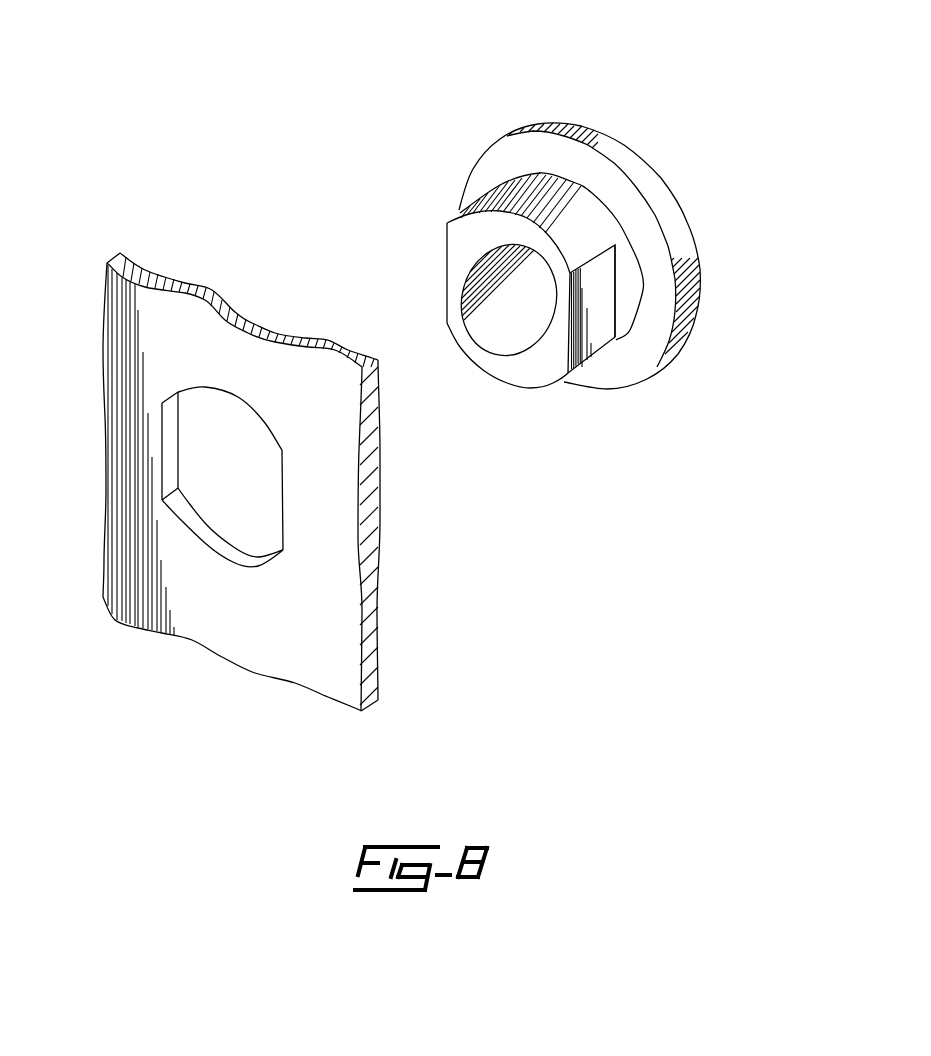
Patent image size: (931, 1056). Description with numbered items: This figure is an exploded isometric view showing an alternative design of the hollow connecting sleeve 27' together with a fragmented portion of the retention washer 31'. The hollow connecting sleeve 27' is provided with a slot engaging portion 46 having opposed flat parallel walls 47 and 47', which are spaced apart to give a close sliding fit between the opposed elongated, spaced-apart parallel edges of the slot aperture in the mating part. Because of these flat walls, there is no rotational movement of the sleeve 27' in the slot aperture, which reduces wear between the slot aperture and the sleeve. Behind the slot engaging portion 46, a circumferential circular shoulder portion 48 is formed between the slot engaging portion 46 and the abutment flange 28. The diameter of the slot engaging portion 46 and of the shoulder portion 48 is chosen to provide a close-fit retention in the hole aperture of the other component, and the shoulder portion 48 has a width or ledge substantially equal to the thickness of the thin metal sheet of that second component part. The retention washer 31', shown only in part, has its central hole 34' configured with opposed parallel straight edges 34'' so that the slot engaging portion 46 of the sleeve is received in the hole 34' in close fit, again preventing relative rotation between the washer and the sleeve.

The hollow connecting sleeve 27' is at (546, 202).
The abutment flange 28 is at (608, 148).
The retention washer 31' is at (351, 482).
The central hole 34' is at (200, 383).
The opposed parallel straight edges 34'' is at (155, 479).
The slot engaging portion 46 is at (594, 297).
The flat parallel wall 47 is at (667, 329).
The flat parallel wall 47' is at (438, 277).
The circumferential circular shoulder portion 48 is at (652, 264).